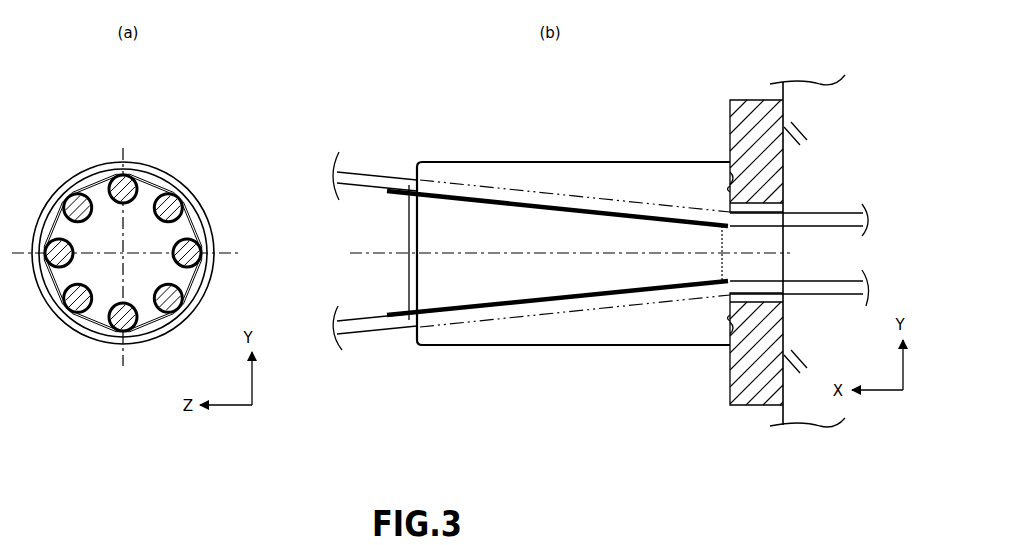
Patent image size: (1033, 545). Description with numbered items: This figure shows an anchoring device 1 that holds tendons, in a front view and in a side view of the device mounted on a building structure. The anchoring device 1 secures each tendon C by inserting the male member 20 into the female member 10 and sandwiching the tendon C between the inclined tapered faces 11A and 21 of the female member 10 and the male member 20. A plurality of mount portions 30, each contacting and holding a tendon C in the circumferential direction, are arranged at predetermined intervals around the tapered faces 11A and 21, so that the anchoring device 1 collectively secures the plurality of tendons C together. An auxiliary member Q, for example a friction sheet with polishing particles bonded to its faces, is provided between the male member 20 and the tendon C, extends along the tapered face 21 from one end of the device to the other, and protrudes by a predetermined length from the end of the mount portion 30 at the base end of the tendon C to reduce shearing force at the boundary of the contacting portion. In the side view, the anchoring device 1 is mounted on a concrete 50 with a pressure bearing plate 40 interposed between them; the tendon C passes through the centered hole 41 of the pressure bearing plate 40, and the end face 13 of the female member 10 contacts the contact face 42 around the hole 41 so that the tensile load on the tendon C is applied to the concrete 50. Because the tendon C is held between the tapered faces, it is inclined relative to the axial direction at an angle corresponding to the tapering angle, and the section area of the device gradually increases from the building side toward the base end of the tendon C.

The anchoring device 1 is at (166, 142).
The female member 10 is at (211, 177).
The tapered face 11A is at (208, 248).
The end face 13 is at (735, 178).
The male member 20 is at (158, 190).
The tapered face 21 is at (204, 236).
The mount portion 30 is at (119, 170).
The pressure bearing plate 40 is at (744, 108).
The hole 41 is at (770, 239).
The contact face 42 is at (740, 186).
The concrete 50 is at (826, 97).
The tendon C is at (136, 177).
The auxiliary member Q is at (104, 188).